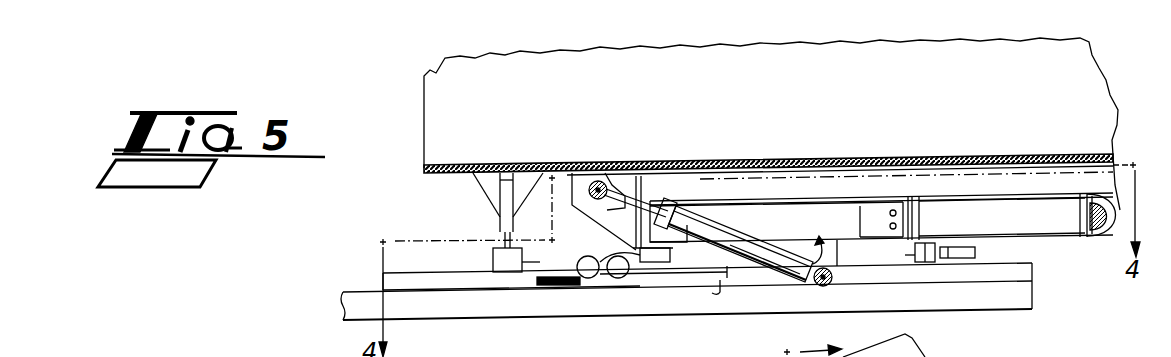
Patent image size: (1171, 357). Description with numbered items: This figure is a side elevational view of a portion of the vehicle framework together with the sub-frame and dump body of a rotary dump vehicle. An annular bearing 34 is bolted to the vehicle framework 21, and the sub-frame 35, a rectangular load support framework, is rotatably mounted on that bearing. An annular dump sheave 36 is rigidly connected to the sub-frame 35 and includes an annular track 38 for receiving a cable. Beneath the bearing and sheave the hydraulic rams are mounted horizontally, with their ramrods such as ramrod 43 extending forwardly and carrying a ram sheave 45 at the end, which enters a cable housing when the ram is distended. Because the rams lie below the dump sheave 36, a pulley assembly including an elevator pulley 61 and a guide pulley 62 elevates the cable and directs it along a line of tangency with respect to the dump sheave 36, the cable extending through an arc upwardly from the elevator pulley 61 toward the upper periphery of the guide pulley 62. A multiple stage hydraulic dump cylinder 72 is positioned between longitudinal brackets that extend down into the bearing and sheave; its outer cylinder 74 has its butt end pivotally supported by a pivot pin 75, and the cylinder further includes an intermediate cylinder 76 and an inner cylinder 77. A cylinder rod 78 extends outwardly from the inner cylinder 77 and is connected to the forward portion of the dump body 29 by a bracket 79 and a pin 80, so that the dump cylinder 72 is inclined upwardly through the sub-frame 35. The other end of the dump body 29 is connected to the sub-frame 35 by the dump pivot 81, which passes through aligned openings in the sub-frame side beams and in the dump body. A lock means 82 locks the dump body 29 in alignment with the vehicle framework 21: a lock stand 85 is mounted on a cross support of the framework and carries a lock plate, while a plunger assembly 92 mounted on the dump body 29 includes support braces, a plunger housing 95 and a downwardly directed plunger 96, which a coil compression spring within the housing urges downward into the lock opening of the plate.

The dump body 29 is at (841, 84).
The sub-frame 35 is at (1020, 193).
The dump pivot 81 is at (1105, 207).
The cylinder rod 78 is at (638, 212).
The inner cylinder 77 is at (672, 210).
The bracket 79 is at (580, 195).
The pin 80 is at (601, 181).
The intermediate cylinder 76 is at (684, 222).
The multiple stage hydraulic dump cylinder 72 is at (737, 226).
The outer cylinder 74 is at (770, 258).
The pivot pin 75 is at (823, 287).
The annular dump sheave 36 is at (950, 255).
The annular bearing 34 is at (674, 250).
The vehicle framework 21 is at (490, 308).
The lock means 82 is at (470, 234).
The plunger housing 95 is at (503, 183).
The plunger assembly 92 is at (498, 190).
The plunger 96 is at (500, 248).
The lock stand 85 is at (498, 264).
The ram sheave 45 is at (546, 255).
The ramrod 43 is at (588, 278).
The elevator pulley 61 is at (583, 283).
The guide pulley 62 is at (618, 272).
The annular track 38 is at (637, 251).